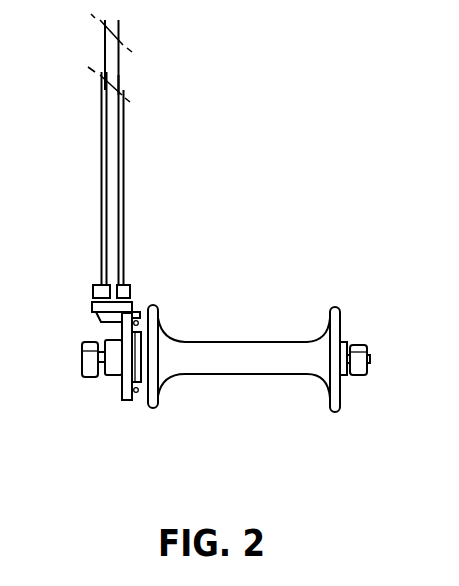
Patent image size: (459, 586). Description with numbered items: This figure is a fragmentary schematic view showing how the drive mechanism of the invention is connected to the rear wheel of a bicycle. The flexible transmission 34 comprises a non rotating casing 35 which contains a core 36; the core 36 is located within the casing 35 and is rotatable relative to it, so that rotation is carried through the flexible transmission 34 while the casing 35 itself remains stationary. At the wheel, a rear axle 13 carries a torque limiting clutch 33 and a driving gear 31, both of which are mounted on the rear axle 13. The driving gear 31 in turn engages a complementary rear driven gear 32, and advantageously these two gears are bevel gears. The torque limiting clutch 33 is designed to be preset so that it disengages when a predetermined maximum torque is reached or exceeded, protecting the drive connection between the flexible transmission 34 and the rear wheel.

The rear axle 13 is at (223, 352).
The driving gear 31 is at (108, 382).
The rear driven gear 32 is at (95, 307).
The torque limiting clutch 33 is at (140, 401).
The flexible transmission 34 is at (153, 149).
The non rotating casing 35 is at (102, 215).
The core 36 is at (119, 60).